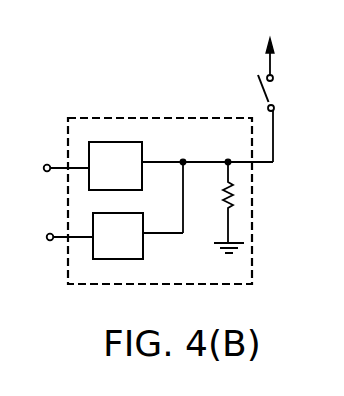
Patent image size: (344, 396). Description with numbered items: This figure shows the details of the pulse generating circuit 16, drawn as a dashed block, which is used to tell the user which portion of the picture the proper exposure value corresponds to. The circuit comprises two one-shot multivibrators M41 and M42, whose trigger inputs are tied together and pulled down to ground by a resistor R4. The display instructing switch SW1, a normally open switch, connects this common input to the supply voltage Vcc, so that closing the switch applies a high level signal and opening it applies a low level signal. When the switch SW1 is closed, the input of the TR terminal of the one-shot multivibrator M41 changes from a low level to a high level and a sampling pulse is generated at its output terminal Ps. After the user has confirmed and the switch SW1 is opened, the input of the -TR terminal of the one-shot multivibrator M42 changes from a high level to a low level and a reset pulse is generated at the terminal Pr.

The pulse generating circuit 16 is at (252, 232).
The one-shot multivibrator M41 is at (143, 145).
The one-shot multivibrator M42 is at (136, 259).
The resistor R4 is at (222, 190).
The display instructing switch SW1 is at (269, 92).
The supply voltage Vcc is at (269, 45).
The sampling pulse output terminal Ps is at (54, 168).
The reset pulse output terminal Pr is at (56, 237).